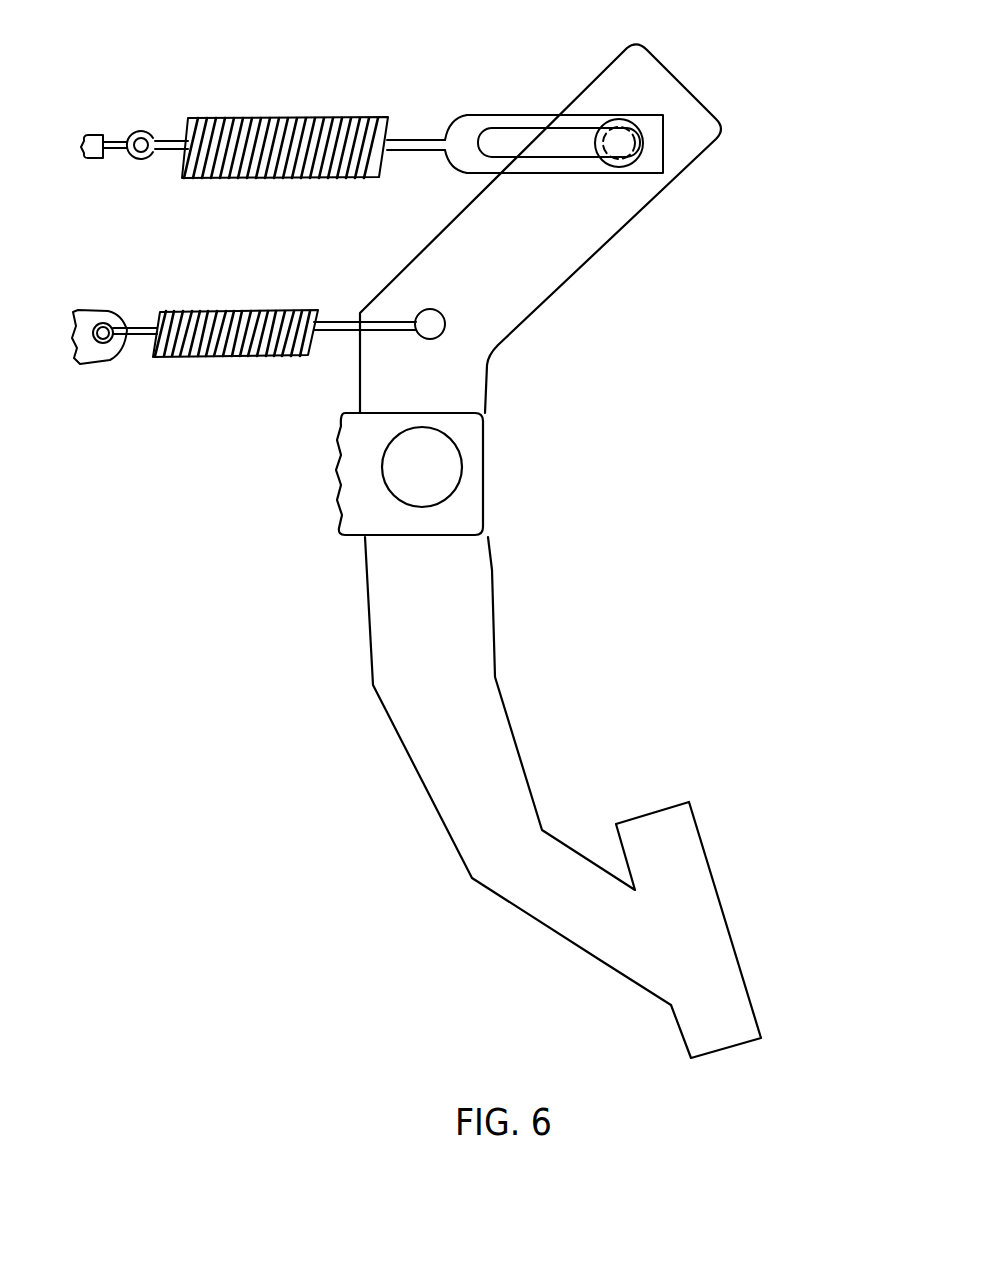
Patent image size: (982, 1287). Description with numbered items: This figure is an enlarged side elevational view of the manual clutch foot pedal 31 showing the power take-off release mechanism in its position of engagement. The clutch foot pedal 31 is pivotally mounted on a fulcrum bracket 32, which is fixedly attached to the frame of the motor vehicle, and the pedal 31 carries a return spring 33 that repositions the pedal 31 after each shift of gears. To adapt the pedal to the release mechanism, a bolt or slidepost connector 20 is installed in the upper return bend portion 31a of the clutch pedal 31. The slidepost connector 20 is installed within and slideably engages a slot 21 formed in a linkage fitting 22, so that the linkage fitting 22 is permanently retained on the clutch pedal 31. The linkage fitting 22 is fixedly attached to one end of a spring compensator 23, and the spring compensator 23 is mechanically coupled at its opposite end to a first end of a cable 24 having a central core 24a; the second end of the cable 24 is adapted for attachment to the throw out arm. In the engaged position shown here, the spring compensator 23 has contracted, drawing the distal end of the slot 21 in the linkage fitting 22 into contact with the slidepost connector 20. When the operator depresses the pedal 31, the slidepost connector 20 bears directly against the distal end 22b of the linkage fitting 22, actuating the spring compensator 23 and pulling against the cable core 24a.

The slidepost connector 20 is at (636, 118).
The slot 21 is at (502, 140).
The linkage fitting 22 is at (594, 151).
The distal end of linkage fitting 22b is at (648, 162).
The spring compensator 23 is at (308, 117).
The cable 24 is at (98, 132).
The central core 24a is at (117, 138).
The clutch foot pedal 31 is at (589, 551).
The upper return bend portion 31a is at (517, 293).
The fulcrum bracket 32 is at (472, 520).
The return spring 33 is at (258, 297).